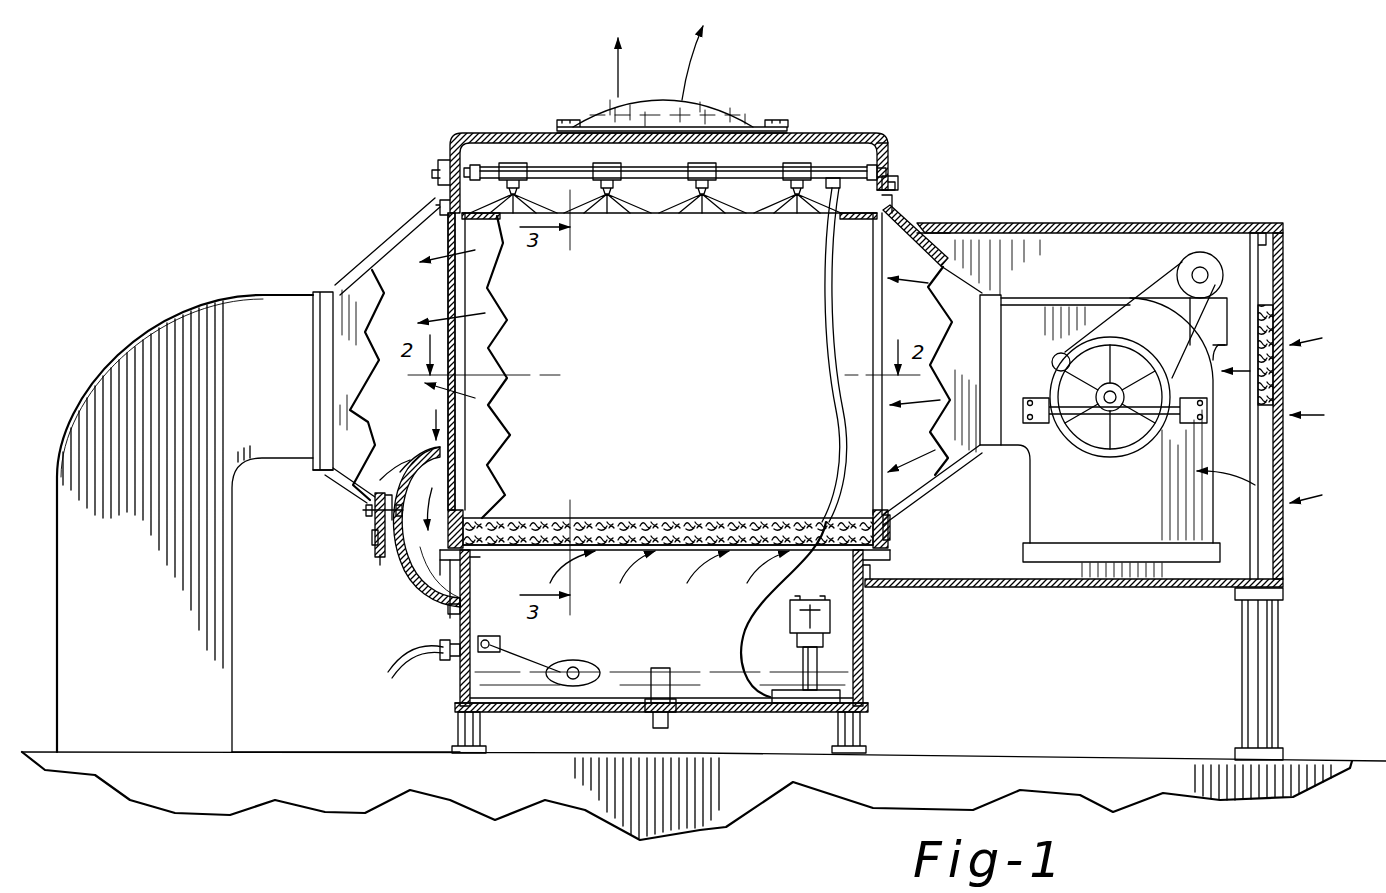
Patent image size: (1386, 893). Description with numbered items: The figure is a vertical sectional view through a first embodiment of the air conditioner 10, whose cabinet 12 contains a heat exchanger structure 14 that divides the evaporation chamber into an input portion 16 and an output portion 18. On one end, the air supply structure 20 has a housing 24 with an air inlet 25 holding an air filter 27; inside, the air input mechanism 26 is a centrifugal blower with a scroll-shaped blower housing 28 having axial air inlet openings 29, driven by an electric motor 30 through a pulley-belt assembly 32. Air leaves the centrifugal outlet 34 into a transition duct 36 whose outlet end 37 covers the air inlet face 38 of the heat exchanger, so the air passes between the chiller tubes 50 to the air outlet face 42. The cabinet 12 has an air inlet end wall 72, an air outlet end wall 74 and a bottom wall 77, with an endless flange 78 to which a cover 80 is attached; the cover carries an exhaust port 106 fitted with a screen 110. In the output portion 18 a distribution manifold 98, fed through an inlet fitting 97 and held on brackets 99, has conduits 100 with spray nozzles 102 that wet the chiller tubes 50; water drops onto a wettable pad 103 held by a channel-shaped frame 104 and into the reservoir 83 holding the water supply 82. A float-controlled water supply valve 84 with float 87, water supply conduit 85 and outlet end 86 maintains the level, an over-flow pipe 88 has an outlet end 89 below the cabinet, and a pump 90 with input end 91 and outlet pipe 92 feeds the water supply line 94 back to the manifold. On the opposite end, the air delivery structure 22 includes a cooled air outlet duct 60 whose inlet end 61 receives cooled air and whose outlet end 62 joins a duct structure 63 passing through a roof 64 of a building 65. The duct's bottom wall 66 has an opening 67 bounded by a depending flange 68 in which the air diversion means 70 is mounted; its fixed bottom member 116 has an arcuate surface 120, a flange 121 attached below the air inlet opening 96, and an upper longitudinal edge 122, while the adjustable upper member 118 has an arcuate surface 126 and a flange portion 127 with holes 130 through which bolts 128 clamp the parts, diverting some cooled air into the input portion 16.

The air conditioner 10 is at (970, 158).
The cabinet 12 is at (866, 637).
The heat exchanger structure 14 is at (649, 346).
The input portion 16 is at (639, 618).
The output portion 18 is at (833, 150).
The air supply structure 20 is at (1168, 222).
The air delivery structure 22 is at (332, 290).
The housing 24 is at (1035, 223).
The air inlet 25 is at (1280, 233).
The air input mechanism 26 is at (1098, 294).
The air filter 27 is at (1268, 310).
The blower housing 28 is at (1212, 427).
The axial air inlet opening 29 is at (1062, 368).
The electric motor 30 is at (1186, 262).
The pulley-belt assembly 32 is at (1127, 313).
The centrifugal outlet 34 is at (1020, 295).
The transition duct 36 is at (975, 283).
The outlet end 37 is at (908, 212).
The air inlet face 38 is at (873, 330).
The air outlet face 42 is at (452, 292).
The chiller tubes 50 is at (503, 283).
The cooled air outlet duct 60 is at (378, 290).
The inlet end 61 is at (447, 212).
The outlet end 62 is at (313, 476).
The duct structure 63 is at (208, 295).
The roof 64 is at (345, 752).
The building 65 is at (356, 786).
The bottom wall 66 is at (355, 492).
The opening 67 is at (408, 470).
The depending flange 68 is at (375, 522).
The air diversion means 70 is at (422, 415).
The air inlet end wall 72 is at (866, 653).
The air outlet end wall 74 is at (462, 690).
The bottom wall 77 is at (732, 712).
The endless flange 78 is at (899, 183).
The cover 80 is at (452, 136).
The water supply 82 is at (612, 703).
The reservoir 83 is at (590, 703).
The water supply valve 84 is at (503, 643).
The water supply conduit 85 is at (390, 668).
The outlet end 86 is at (450, 651).
The float 87 is at (585, 663).
The over-flow pipe 88 is at (661, 668).
The outlet end 89 is at (672, 722).
The pump 90 is at (866, 617).
The input end 91 is at (850, 690).
The outlet pipe 92 is at (780, 706).
The water supply line 94 is at (733, 637).
The air inlet opening 96 is at (472, 578).
The inlet fitting 97 is at (882, 147).
The distribution manifold 98 is at (772, 158).
The brackets 99 is at (445, 170).
The conduits 100 is at (702, 166).
The spray nozzles 102 is at (515, 163).
The wettable pad 103 is at (800, 520).
The channel-shaped frame 104 is at (562, 520).
The exhaust port 106 is at (745, 135).
The screen 110 is at (695, 108).
The bottom member 116 is at (400, 582).
The upper member 118 is at (427, 448).
The arcuate surface 120 is at (415, 597).
The flange 121 is at (450, 612).
The upper longitudinal edge 122 is at (406, 483).
The arcuate surface 126 is at (378, 490).
The flange portion 127 is at (382, 562).
The bolts 128 is at (365, 511).
The holes 130 is at (378, 540).